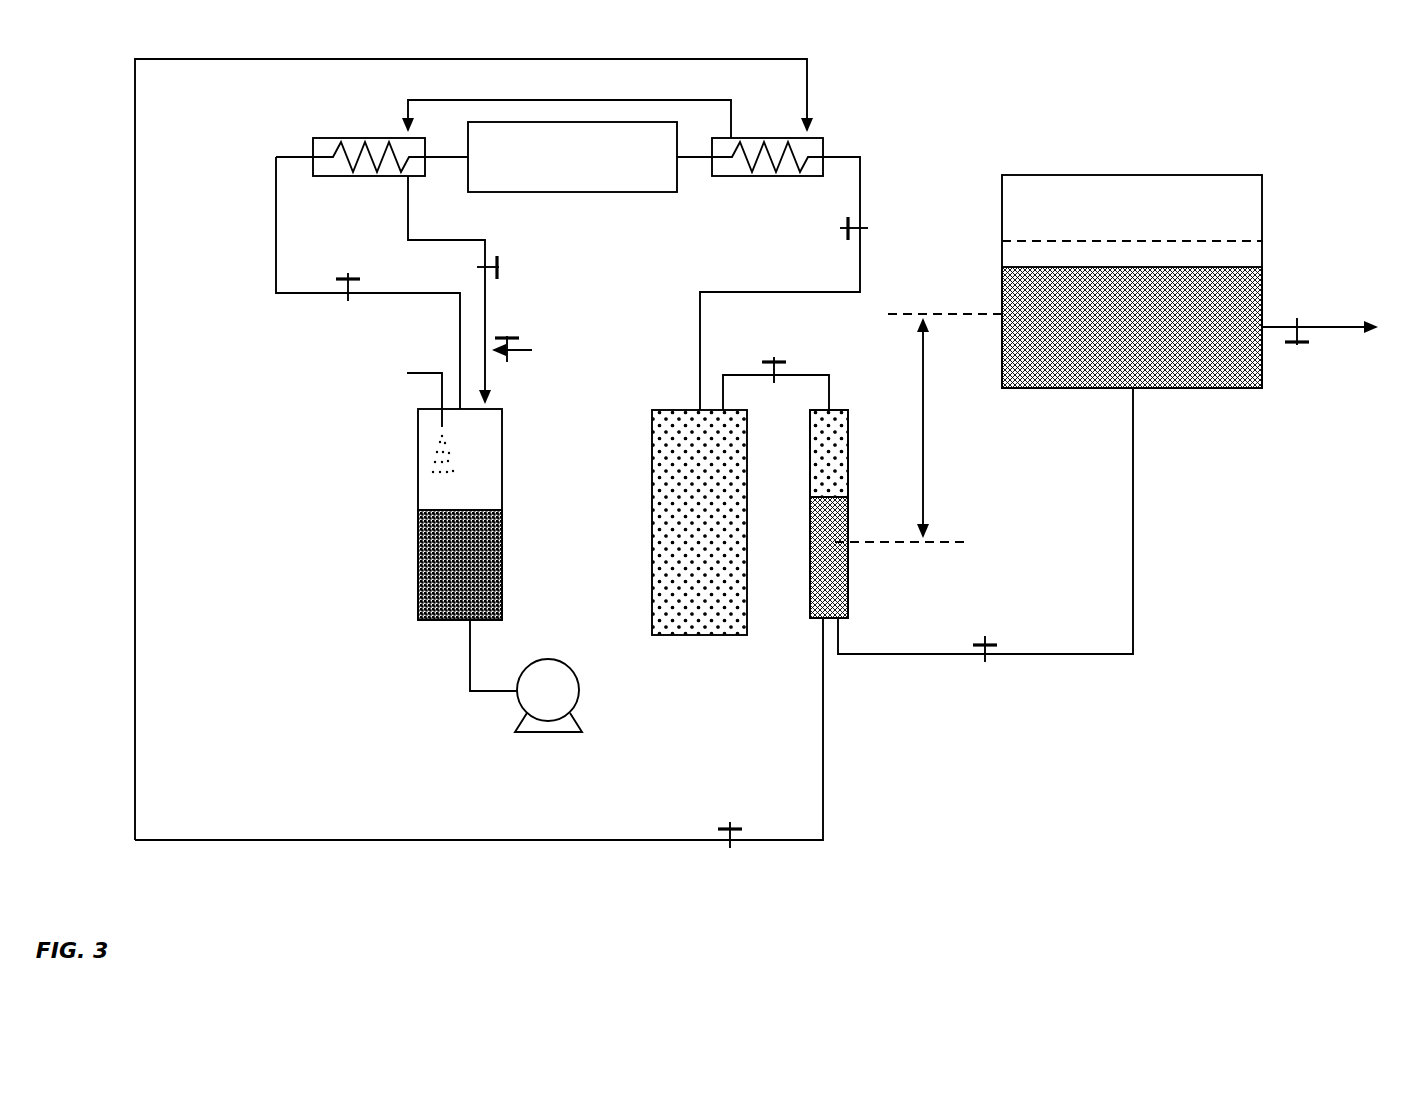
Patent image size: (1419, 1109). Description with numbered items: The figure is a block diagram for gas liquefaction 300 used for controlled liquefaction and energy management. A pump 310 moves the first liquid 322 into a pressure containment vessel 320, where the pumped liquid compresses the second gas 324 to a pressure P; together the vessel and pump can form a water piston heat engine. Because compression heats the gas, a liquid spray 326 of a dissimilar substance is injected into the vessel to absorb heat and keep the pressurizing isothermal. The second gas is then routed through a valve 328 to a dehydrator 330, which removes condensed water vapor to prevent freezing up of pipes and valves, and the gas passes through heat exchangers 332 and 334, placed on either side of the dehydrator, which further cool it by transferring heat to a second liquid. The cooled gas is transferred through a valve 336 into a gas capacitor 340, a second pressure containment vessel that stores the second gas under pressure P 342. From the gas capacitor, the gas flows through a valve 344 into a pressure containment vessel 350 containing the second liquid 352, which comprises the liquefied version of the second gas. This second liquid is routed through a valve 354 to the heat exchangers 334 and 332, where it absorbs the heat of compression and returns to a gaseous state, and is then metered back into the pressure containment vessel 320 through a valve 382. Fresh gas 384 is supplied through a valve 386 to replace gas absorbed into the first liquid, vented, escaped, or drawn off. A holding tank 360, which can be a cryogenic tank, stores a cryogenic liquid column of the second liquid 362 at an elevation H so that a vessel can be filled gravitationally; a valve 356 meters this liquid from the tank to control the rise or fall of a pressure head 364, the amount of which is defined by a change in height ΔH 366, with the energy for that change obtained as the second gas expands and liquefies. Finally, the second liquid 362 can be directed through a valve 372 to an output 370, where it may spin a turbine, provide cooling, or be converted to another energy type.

The block diagram for gas liquefaction 300 is at (1282, 878).
The pump 310 is at (548, 733).
The pressure containment vessel 320 is at (436, 628).
The liquid 1 322 is at (440, 585).
The gas 2 324 is at (434, 491).
The liquid spray 326 is at (385, 410).
The valve 328 is at (348, 272).
The dehydrator 330 is at (572, 157).
The heat exchanger 332 is at (370, 137).
The heat exchanger 334 is at (820, 137).
The valve 336 is at (840, 226).
The gas capacitor 340 is at (652, 570).
The gas 2 under pressure P 342 is at (682, 470).
The valve 344 is at (768, 357).
The pressure containment vessel 350 is at (810, 512).
The liquid 2 352 is at (826, 592).
The valve 354 is at (733, 827).
The valve 356 is at (985, 645).
The holding tank 360 is at (1130, 175).
The liquid 2 362 is at (1167, 348).
The pressure head 364 is at (950, 428).
The change in height ΔH 366 is at (977, 232).
The output 370 is at (1332, 287).
The valve 372 is at (1295, 346).
The valve 382 is at (500, 270).
The fresh gas 384 is at (582, 365).
The valve 386 is at (512, 336).